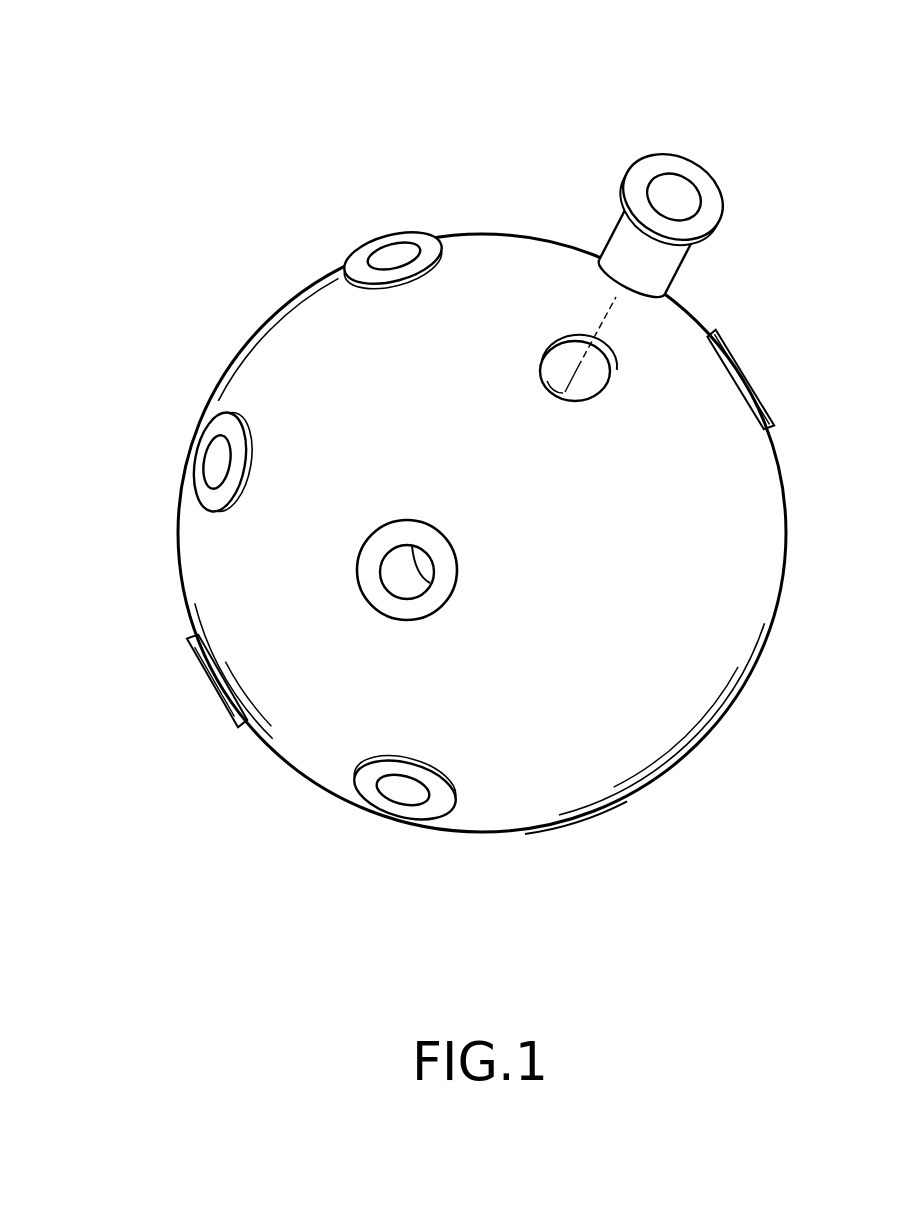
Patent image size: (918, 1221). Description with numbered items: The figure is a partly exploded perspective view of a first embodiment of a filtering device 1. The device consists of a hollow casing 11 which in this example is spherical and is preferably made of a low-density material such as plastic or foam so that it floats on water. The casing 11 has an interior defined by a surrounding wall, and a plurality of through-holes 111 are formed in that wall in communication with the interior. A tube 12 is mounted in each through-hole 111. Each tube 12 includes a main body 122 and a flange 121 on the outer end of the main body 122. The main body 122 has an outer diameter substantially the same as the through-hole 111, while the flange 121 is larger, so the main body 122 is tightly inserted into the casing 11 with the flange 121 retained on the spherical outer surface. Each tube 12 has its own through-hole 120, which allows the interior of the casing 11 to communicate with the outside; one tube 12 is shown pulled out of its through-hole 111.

The filtering device 1 is at (262, 826).
The casing 11 is at (530, 788).
The through-hole 111 is at (559, 357).
The tube 12 is at (414, 420).
The through-hole 120 is at (675, 190).
The flange 121 is at (718, 201).
The main body 122 is at (612, 247).